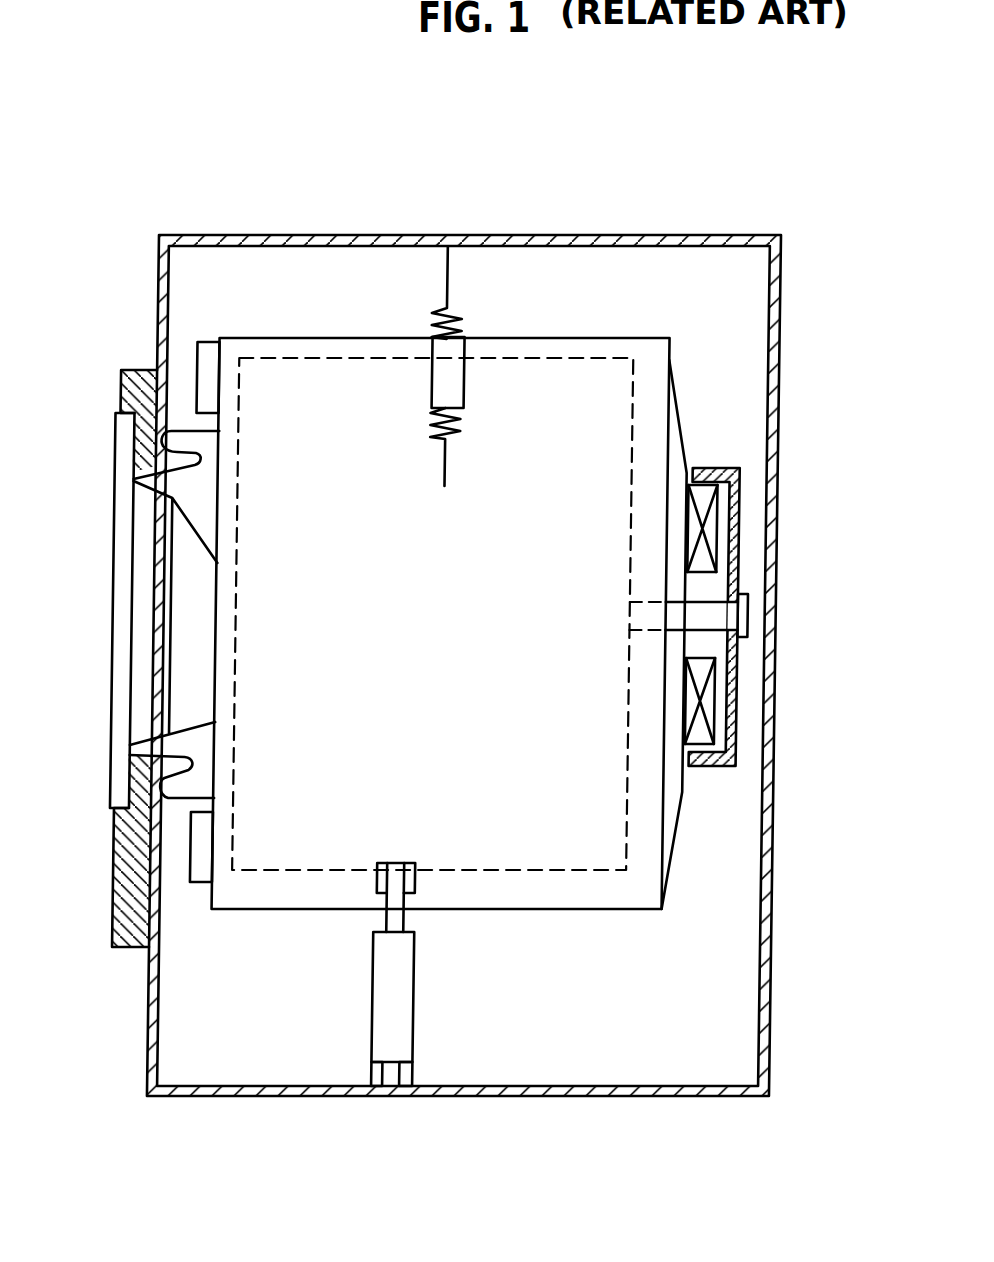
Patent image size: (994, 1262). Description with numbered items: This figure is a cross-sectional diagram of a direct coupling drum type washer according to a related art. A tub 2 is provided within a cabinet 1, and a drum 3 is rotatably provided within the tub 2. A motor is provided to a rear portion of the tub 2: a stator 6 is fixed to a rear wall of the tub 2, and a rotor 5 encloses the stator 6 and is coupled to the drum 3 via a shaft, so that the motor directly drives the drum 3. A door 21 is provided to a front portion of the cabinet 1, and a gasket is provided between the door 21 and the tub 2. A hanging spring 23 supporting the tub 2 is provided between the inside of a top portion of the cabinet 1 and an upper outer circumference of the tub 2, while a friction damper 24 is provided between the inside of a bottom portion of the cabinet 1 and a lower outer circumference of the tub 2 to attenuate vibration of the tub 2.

The cabinet 1 is at (252, 236).
The tub 2 is at (582, 338).
The drum 3 is at (342, 358).
The rotor 5 is at (737, 707).
The stator 6 is at (712, 531).
The door 21 is at (129, 628).
The hanging spring 23 is at (458, 308).
The friction damper 24 is at (409, 1003).